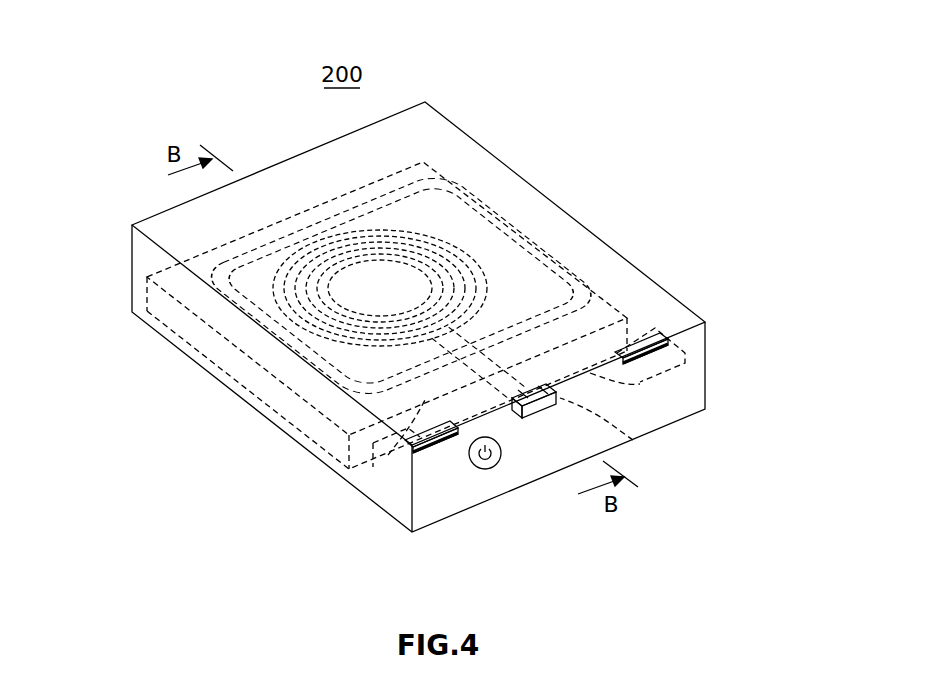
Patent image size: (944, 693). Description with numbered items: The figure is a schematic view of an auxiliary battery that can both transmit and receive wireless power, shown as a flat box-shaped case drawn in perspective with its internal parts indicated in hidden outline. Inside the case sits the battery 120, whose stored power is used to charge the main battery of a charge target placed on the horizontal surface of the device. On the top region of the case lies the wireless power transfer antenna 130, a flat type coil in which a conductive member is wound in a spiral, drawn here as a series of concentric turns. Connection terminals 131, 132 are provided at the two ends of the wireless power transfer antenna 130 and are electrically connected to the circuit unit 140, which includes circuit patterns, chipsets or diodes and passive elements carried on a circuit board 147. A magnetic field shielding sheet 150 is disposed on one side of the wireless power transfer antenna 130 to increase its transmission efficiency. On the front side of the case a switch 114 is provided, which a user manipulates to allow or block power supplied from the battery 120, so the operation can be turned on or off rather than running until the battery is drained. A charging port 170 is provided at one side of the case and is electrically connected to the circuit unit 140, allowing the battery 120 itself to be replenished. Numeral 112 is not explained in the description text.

The upper case 112 is at (433, 125).
The battery 120 is at (450, 163).
The wireless power transfer antenna 130 is at (533, 243).
The magnetic field shielding sheet 150 is at (500, 213).
The circuit unit 140 is at (692, 339).
The circuit board 147 is at (640, 384).
The connection terminal 131 is at (388, 455).
The connection terminal 132 is at (633, 440).
The switch 114 is at (490, 470).
The charging port 170 is at (540, 420).